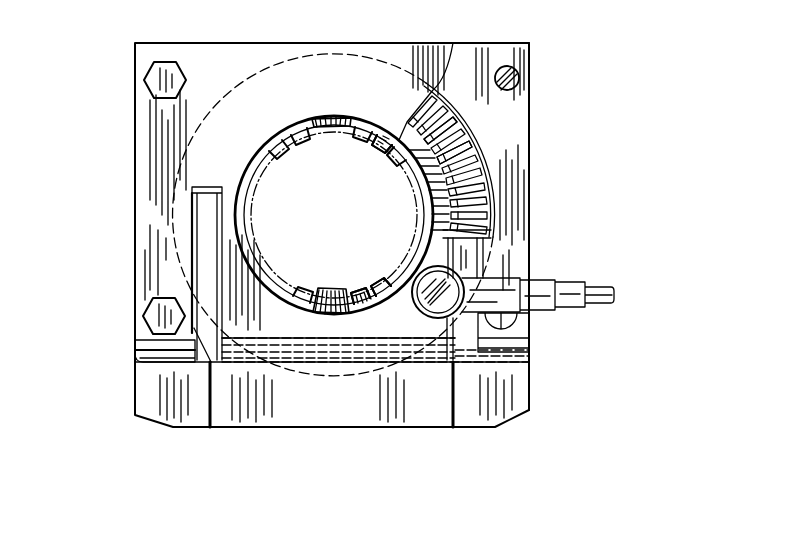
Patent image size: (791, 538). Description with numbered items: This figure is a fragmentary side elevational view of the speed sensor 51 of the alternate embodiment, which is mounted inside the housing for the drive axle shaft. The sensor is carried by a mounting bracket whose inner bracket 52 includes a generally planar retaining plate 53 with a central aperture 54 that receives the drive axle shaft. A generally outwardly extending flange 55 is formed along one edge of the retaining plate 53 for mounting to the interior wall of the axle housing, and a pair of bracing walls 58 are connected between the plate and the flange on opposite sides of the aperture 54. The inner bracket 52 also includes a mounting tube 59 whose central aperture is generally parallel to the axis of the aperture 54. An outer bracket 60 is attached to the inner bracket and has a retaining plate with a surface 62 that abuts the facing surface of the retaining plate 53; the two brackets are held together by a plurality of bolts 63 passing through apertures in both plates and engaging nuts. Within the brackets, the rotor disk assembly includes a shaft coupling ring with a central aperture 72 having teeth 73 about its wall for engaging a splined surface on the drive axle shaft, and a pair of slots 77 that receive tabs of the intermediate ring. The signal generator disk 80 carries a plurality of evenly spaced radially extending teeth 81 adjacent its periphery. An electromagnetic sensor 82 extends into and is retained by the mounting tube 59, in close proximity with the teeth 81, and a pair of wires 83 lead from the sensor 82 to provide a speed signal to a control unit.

The speed sensor 51 is at (572, 33).
The inner bracket 52 is at (136, 134).
The retaining plate 53 is at (147, 207).
The central aperture 54 is at (237, 226).
The flange 55 is at (150, 397).
The bracing walls 58 is at (200, 334).
The mounting tube 59 is at (435, 308).
The outer bracket 60 is at (531, 151).
The surface 62 is at (523, 193).
The bolts 63 is at (152, 82).
The central aperture 72 is at (385, 146).
The teeth 73 is at (369, 292).
The slots 77 is at (333, 128).
The signal generator disk 80 is at (347, 209).
The teeth 81 is at (467, 148).
The electromagnetic sensor 82 is at (432, 310).
The wires 83 is at (612, 287).